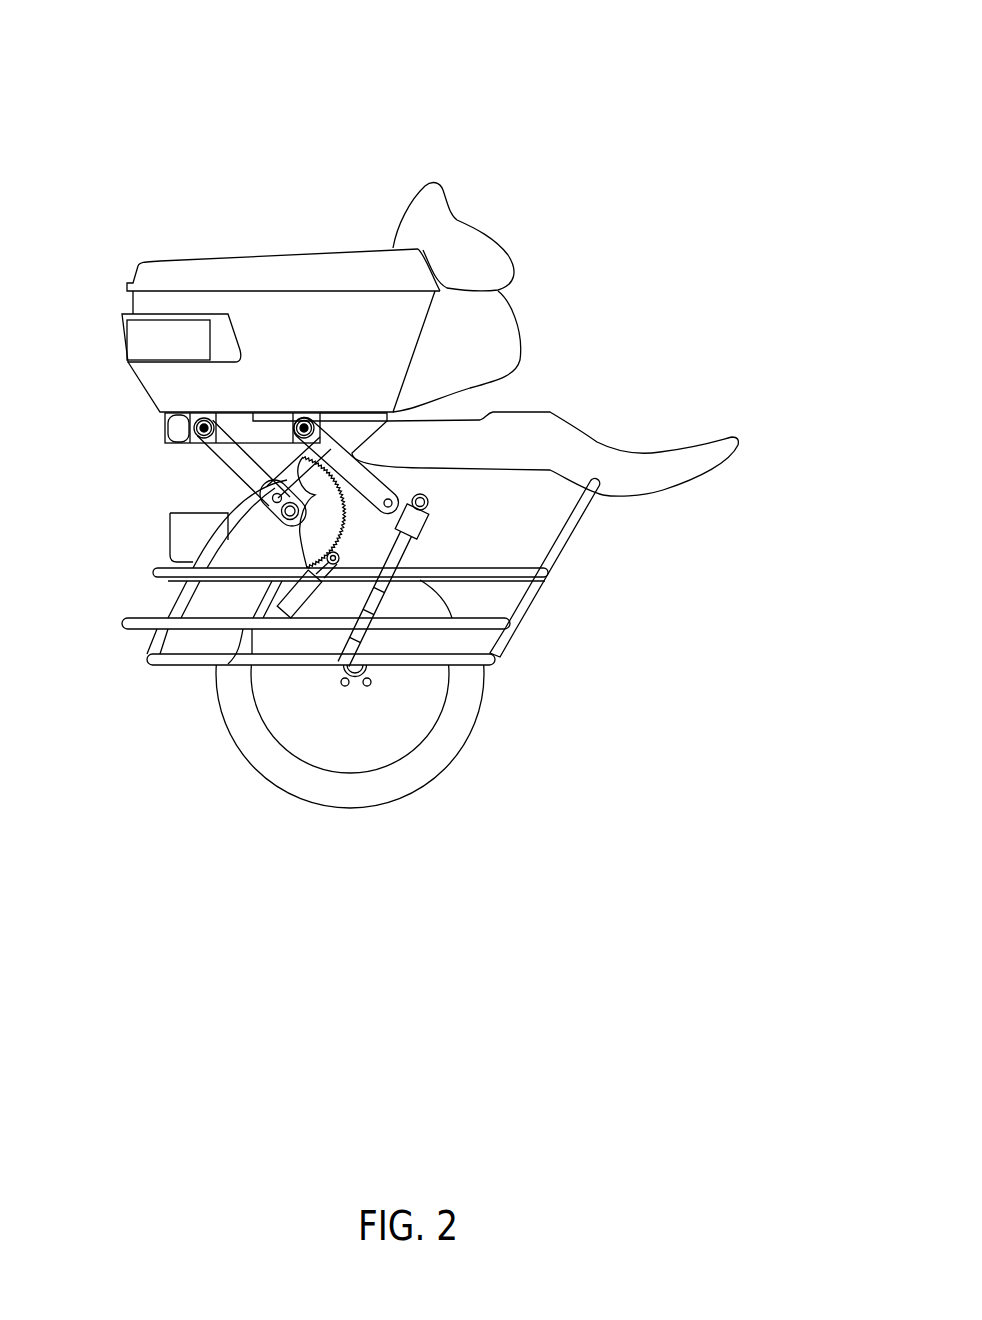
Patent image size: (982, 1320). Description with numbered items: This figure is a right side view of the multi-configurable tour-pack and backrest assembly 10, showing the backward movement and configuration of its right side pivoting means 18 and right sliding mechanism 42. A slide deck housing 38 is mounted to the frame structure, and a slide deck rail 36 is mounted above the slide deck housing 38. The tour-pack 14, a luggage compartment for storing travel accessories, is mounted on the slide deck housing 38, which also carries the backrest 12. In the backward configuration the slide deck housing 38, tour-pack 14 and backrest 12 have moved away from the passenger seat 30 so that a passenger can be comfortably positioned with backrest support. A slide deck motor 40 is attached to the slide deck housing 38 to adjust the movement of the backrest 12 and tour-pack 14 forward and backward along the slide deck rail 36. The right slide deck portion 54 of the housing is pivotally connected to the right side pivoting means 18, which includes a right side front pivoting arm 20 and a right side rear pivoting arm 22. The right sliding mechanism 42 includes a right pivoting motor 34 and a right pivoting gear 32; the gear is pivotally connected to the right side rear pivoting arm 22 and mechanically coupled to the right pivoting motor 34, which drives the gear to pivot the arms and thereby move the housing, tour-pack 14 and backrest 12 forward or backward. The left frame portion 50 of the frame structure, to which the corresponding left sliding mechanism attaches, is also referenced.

The multi-configurable tour-pack and backrest assembly 10 is at (500, 72).
The backrest 12 is at (500, 313).
The tour-pack 14 is at (278, 305).
The right side pivoting means 18 is at (191, 463).
The right side front pivoting arm 20 is at (373, 483).
The right side rear pivoting arm 22 is at (243, 479).
The passenger seat 30 is at (453, 437).
The right pivoting gear 32 is at (322, 540).
The right pivoting motor 34 is at (285, 602).
The slide deck rail 36 is at (380, 415).
The slide deck housing 38 is at (150, 420).
The slide deck motor 40 is at (178, 435).
The right sliding mechanism 42 is at (372, 533).
The left frame portion 50 is at (566, 569).
The right slide deck portion 54 is at (243, 423).